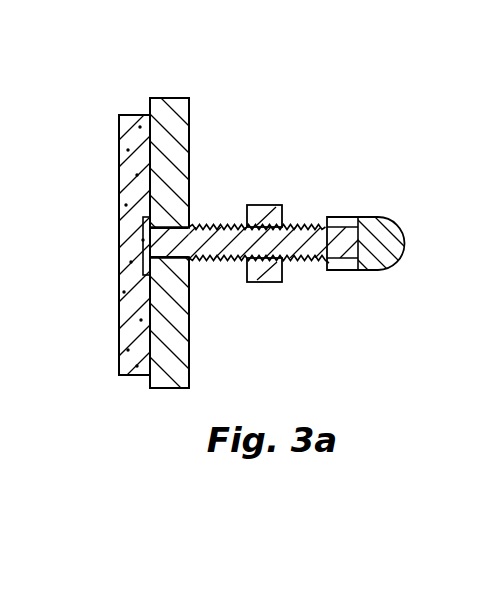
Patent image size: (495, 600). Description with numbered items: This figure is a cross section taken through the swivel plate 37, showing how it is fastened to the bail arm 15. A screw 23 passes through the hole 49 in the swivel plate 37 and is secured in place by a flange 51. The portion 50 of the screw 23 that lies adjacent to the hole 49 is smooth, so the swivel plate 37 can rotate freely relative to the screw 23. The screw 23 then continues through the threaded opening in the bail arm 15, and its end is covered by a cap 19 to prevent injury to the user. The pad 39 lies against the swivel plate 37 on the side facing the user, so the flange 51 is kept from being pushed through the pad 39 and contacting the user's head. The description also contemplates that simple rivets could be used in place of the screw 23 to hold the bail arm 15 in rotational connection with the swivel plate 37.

The pad 39 is at (120, 127).
The swivel plate 37 is at (187, 103).
The portion of screw 50 is at (161, 233).
The bail arm 15 is at (260, 205).
The screw 23 is at (300, 223).
The cap 19 is at (385, 213).
The flange 51 is at (141, 257).
The hole 49 is at (190, 267).